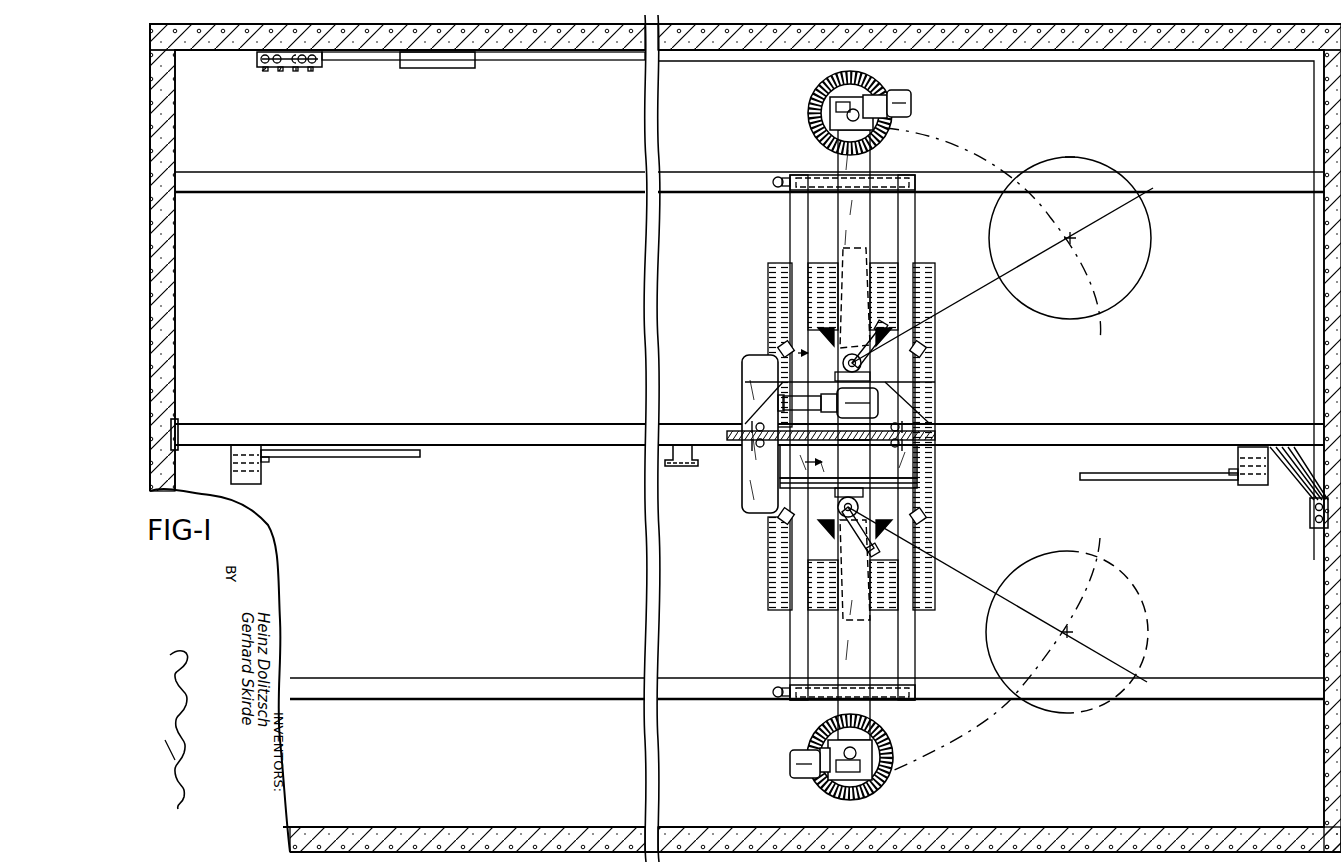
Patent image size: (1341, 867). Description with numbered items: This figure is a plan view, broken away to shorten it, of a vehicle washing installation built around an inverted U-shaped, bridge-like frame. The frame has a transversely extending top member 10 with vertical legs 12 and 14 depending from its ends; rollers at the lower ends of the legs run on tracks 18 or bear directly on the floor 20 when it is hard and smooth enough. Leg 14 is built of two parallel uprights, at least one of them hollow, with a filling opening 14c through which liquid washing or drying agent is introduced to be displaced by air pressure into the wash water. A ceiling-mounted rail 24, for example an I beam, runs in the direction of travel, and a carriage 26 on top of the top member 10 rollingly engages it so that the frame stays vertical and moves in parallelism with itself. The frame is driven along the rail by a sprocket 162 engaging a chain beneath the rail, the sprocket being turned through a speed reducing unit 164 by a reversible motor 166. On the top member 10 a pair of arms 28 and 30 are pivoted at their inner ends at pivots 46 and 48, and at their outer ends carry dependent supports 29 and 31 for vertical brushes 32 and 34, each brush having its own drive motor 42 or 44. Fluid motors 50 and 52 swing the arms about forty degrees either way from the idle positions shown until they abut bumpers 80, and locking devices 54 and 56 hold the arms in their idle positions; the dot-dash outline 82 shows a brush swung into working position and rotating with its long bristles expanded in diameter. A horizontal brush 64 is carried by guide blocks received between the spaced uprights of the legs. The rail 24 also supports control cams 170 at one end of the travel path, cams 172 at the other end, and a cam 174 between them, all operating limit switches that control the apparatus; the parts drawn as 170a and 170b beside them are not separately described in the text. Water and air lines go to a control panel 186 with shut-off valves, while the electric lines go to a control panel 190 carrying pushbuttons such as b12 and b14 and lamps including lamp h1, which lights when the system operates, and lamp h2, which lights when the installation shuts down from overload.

The top member 10 is at (870, 250).
The vertical leg 12 is at (786, 200).
The vertical leg 14 is at (786, 708).
The filling opening 14c is at (780, 686).
The tracks 18 is at (470, 194).
The floor 20 is at (542, 339).
The rail 24 is at (1145, 432).
The carriage 26 is at (738, 450).
The arm 28 is at (855, 200).
The dependent support 29 is at (822, 133).
The arm 30 is at (860, 672).
The dependent support 31 is at (866, 732).
The vertical brush 32 is at (812, 113).
The vertical brush 34 is at (888, 770).
The drive motor 42 is at (912, 100).
The drive motor 44 is at (790, 764).
The pivot 46 is at (866, 358).
The pivot 48 is at (866, 504).
The fluid motor 50 is at (862, 348).
The fluid motor 52 is at (874, 565).
The locking device 54 is at (828, 330).
The locking device 56 is at (824, 537).
The horizontal brush 64 is at (934, 470).
The bumpers 80 is at (780, 345).
The dot-dash outline 82 is at (1062, 160).
The sprocket 162 is at (795, 426).
The speed reducing unit 164 is at (797, 403).
The reversible motor 166 is at (862, 403).
The control cams 170 is at (1232, 478).
The right stop bar 170a is at (1132, 481).
The left stop bar 170b is at (372, 458).
The cams 172 is at (270, 462).
The cam 174 is at (683, 468).
The control panel 186 is at (436, 70).
The control panel 190 is at (258, 60).
The pushbutton b12 is at (266, 70).
The pushbutton b14 is at (312, 71).
The lamp h1 is at (296, 71).
The lamp h2 is at (280, 71).